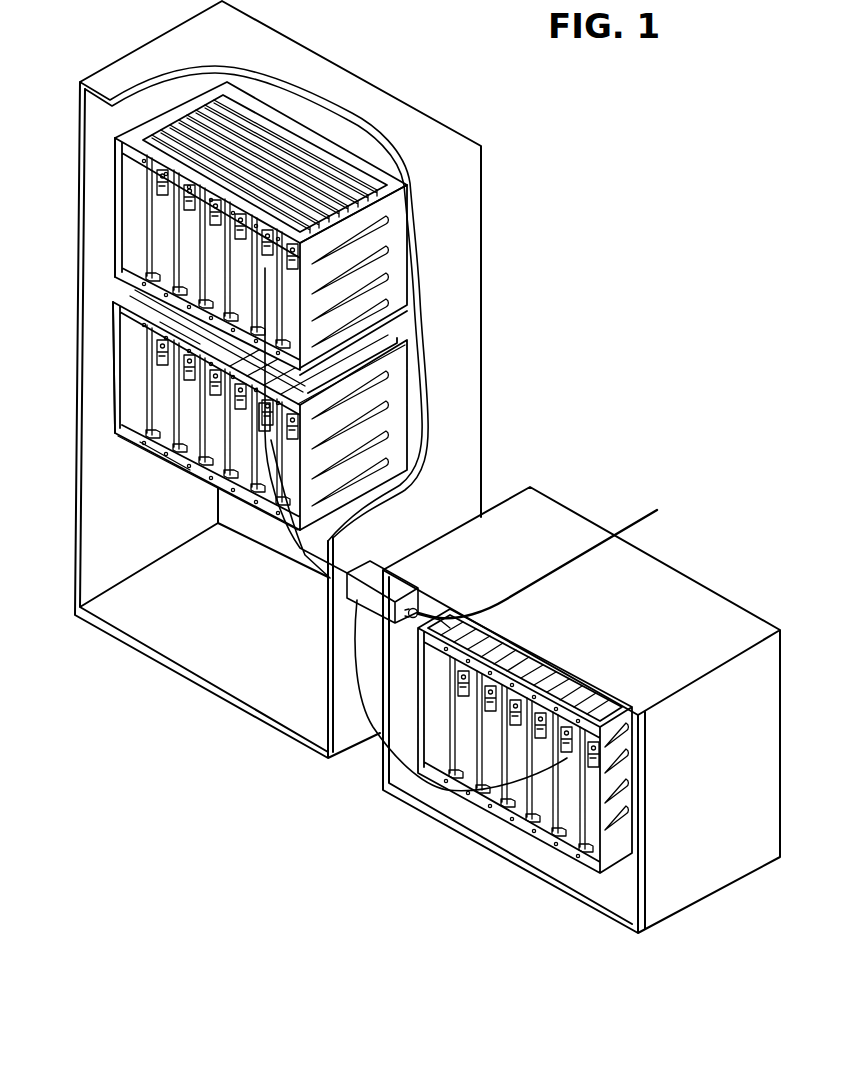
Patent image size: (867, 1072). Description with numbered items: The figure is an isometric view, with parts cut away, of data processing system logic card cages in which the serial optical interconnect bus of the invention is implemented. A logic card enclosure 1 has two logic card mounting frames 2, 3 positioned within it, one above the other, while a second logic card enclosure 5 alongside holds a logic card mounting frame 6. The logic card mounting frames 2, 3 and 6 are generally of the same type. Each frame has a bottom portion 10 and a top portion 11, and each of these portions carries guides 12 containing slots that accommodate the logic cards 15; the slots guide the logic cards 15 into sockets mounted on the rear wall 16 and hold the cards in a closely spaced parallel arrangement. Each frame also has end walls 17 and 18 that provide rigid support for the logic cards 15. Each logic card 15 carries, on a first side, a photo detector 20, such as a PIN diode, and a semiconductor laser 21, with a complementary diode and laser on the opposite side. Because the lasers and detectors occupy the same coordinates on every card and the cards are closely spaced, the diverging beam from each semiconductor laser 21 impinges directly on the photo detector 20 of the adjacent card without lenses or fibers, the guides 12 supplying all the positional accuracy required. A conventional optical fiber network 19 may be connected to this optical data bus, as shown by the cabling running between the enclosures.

The logic card enclosure 1 is at (449, 515).
The logic card mounting frame 2 is at (410, 284).
The logic card mounting frame 3 is at (408, 358).
The second logic card enclosure 5 is at (645, 632).
The logic card mounting frame 6 is at (418, 690).
The bottom portion 10 is at (190, 477).
The top portion 11 is at (137, 300).
The guides 12 is at (200, 326).
The logic cards 15 is at (145, 232).
The rear wall 16 is at (312, 128).
The end wall 17 is at (110, 153).
The end wall 18 is at (400, 215).
The optical fiber network 19 is at (337, 572).
The photo detector 20 is at (156, 186).
The semiconductor laser 21 is at (156, 196).